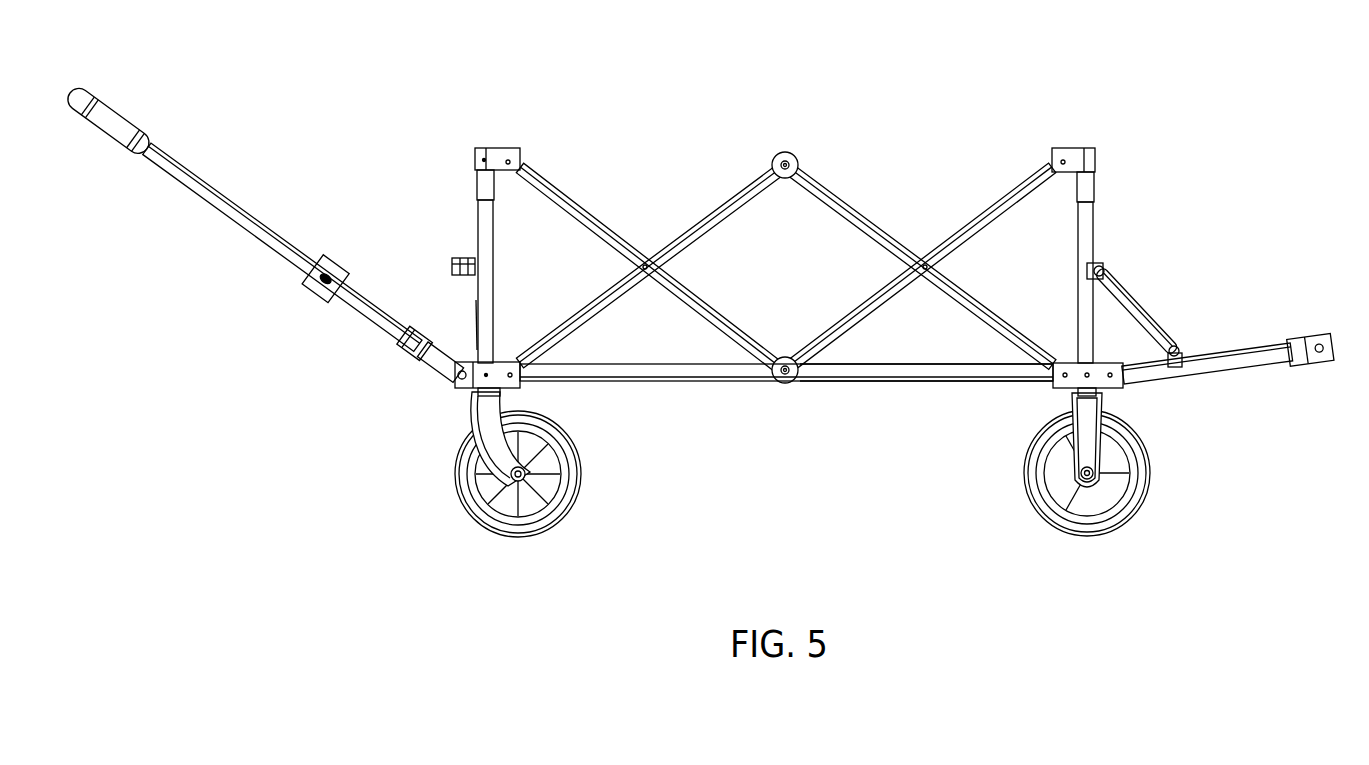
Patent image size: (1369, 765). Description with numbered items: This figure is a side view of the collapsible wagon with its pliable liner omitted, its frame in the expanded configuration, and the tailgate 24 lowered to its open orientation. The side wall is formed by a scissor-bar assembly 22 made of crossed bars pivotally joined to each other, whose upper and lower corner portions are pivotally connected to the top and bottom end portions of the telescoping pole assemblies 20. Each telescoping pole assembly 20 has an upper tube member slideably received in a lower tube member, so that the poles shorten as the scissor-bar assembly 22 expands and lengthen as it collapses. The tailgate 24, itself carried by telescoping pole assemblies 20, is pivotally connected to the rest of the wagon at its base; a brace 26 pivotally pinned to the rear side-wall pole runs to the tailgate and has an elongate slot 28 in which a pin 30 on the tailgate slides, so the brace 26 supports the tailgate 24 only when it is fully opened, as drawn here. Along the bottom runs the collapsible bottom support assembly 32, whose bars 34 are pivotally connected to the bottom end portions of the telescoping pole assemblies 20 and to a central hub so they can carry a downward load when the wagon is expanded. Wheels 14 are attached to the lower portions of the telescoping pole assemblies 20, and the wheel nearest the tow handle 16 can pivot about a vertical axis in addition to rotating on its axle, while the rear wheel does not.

The wheel 14 is at (565, 493).
The tow handle 16 is at (285, 245).
The telescoping pole assembly 20 is at (1086, 207).
The scissor-bar assembly 22 is at (838, 187).
The tailgate 24 is at (485, 213).
The brace 26 is at (1110, 275).
The elongate slot 28 is at (1130, 302).
The pin 30 is at (1178, 365).
The collapsible bottom support assembly 32 is at (678, 372).
The bar 34 is at (890, 373).